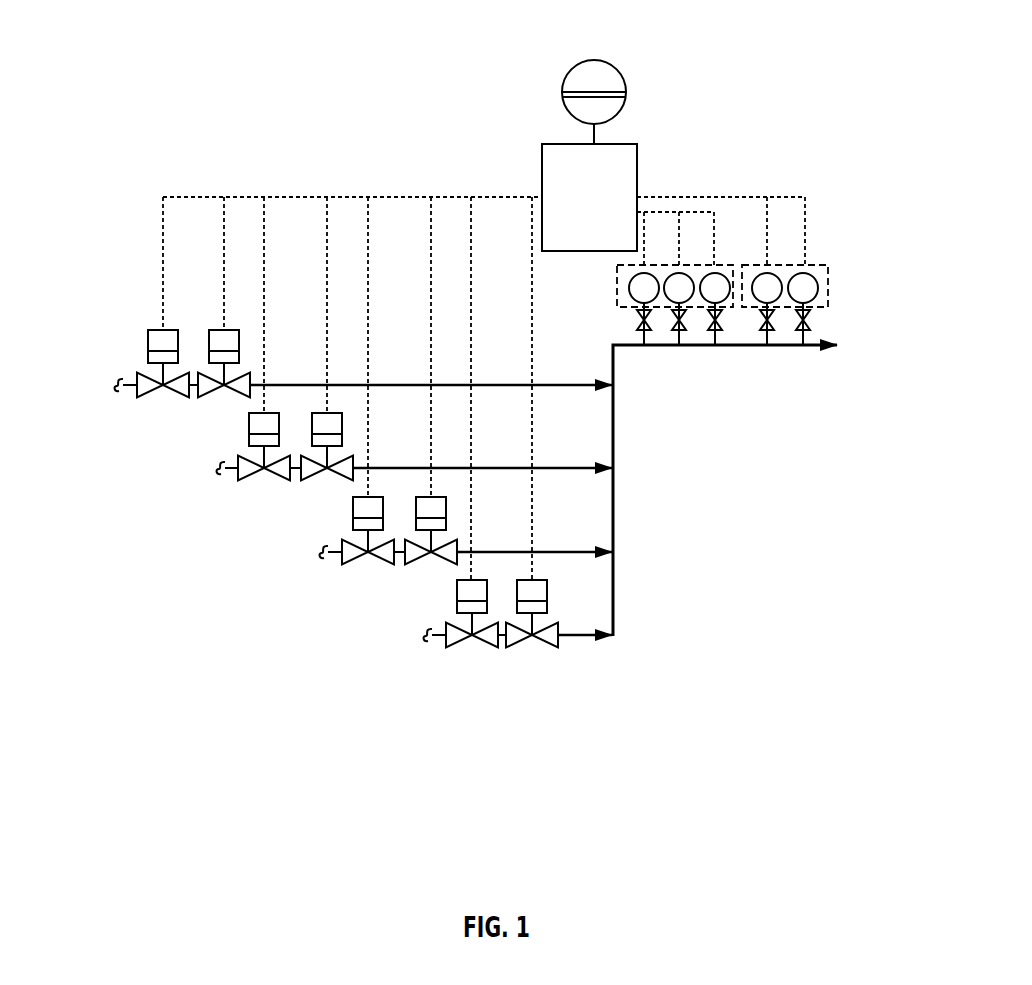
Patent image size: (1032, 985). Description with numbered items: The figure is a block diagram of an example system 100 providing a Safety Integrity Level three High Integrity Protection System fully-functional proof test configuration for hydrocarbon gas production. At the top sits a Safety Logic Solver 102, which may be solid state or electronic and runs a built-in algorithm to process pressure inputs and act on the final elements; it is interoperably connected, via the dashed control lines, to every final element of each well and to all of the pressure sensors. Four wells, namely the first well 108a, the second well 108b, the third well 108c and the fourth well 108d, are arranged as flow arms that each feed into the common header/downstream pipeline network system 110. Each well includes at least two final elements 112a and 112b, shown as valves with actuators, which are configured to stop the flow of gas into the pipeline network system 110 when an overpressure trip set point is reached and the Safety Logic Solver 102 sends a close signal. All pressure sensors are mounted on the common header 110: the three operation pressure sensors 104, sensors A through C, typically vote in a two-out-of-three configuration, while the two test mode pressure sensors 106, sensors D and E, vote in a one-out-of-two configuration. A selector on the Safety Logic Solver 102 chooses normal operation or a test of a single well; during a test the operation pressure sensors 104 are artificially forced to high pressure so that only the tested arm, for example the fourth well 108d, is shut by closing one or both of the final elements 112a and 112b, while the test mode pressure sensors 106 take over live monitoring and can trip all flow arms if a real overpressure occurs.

The system 100 is at (476, 474).
The Safety Logic Solver 102 is at (637, 144).
The operation pressure sensors 104 is at (728, 264).
The test mode pressure sensors 106 is at (830, 272).
The well 1 108a is at (68, 368).
The well 2 108b is at (142, 467).
The well 3 108c is at (242, 552).
The well 4 108d is at (456, 636).
The header/downstream pipeline network system 110 is at (818, 341).
The first final element 112a is at (468, 648).
The second final element 112b is at (530, 646).